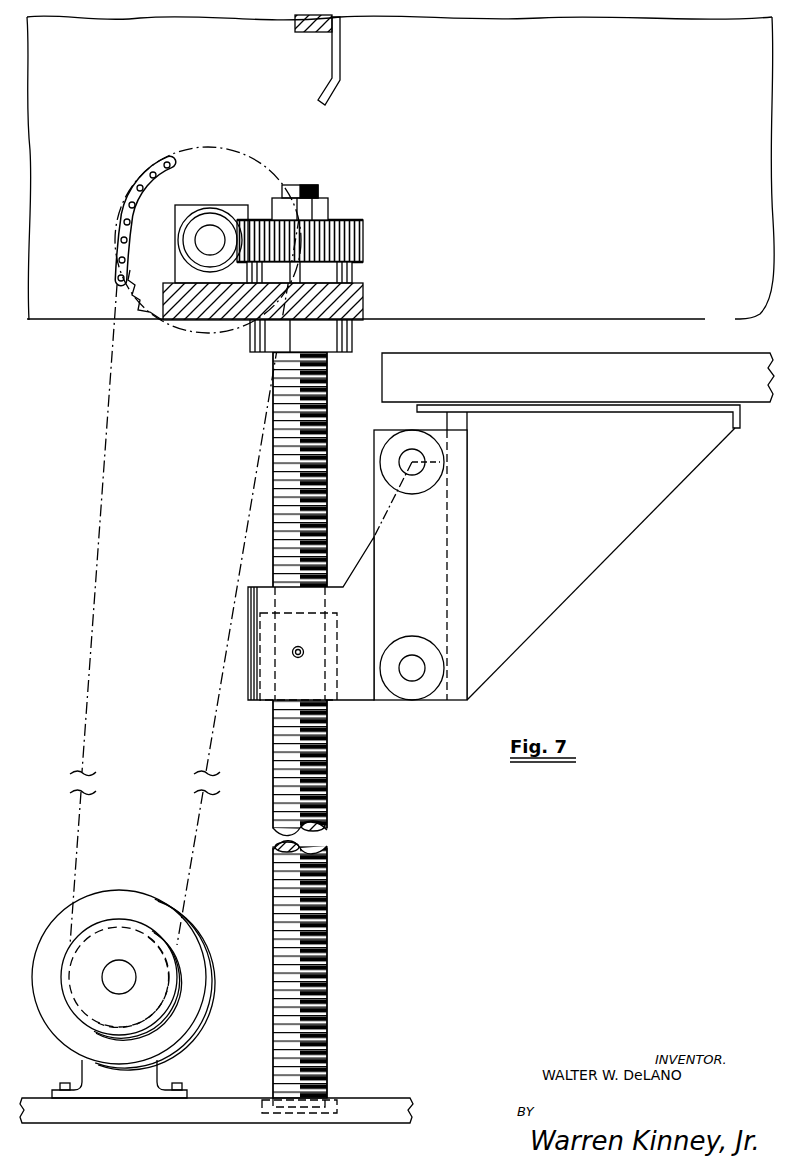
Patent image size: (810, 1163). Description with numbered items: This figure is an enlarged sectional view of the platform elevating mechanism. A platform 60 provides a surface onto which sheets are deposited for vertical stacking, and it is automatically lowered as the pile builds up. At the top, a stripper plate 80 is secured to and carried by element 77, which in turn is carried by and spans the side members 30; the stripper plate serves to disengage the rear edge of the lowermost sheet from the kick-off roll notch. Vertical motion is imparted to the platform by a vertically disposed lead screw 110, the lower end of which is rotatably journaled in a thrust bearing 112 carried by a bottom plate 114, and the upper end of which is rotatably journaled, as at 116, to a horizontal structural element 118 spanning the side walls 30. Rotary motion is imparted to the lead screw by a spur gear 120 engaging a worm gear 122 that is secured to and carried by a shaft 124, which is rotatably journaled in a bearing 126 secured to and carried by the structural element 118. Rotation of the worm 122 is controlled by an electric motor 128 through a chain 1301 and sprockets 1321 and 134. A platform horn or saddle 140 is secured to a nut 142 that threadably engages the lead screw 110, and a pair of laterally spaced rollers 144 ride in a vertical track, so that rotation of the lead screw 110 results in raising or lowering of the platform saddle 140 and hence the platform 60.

The side member 30 is at (530, 310).
The platform 60 is at (702, 367).
The element 77 is at (302, 32).
The stripper plate 80 is at (340, 65).
The lead screw 110 is at (278, 748).
The thrust bearing 112 is at (328, 1100).
The bottom plate 114 is at (360, 1105).
The journal 116 is at (352, 333).
The horizontal structural element 118 is at (363, 300).
The spur gear 120 is at (363, 230).
The worm gear 122 is at (210, 217).
The shaft 124 is at (203, 238).
The bearing 126 is at (182, 263).
The electric motor 128 is at (187, 932).
The sprocket 134 is at (197, 152).
The platform horn or saddle 140 is at (525, 630).
The nut 142 is at (332, 682).
The rollers 144 is at (410, 490).
The chain 1301 is at (195, 865).
The sprocket 1321 is at (120, 923).